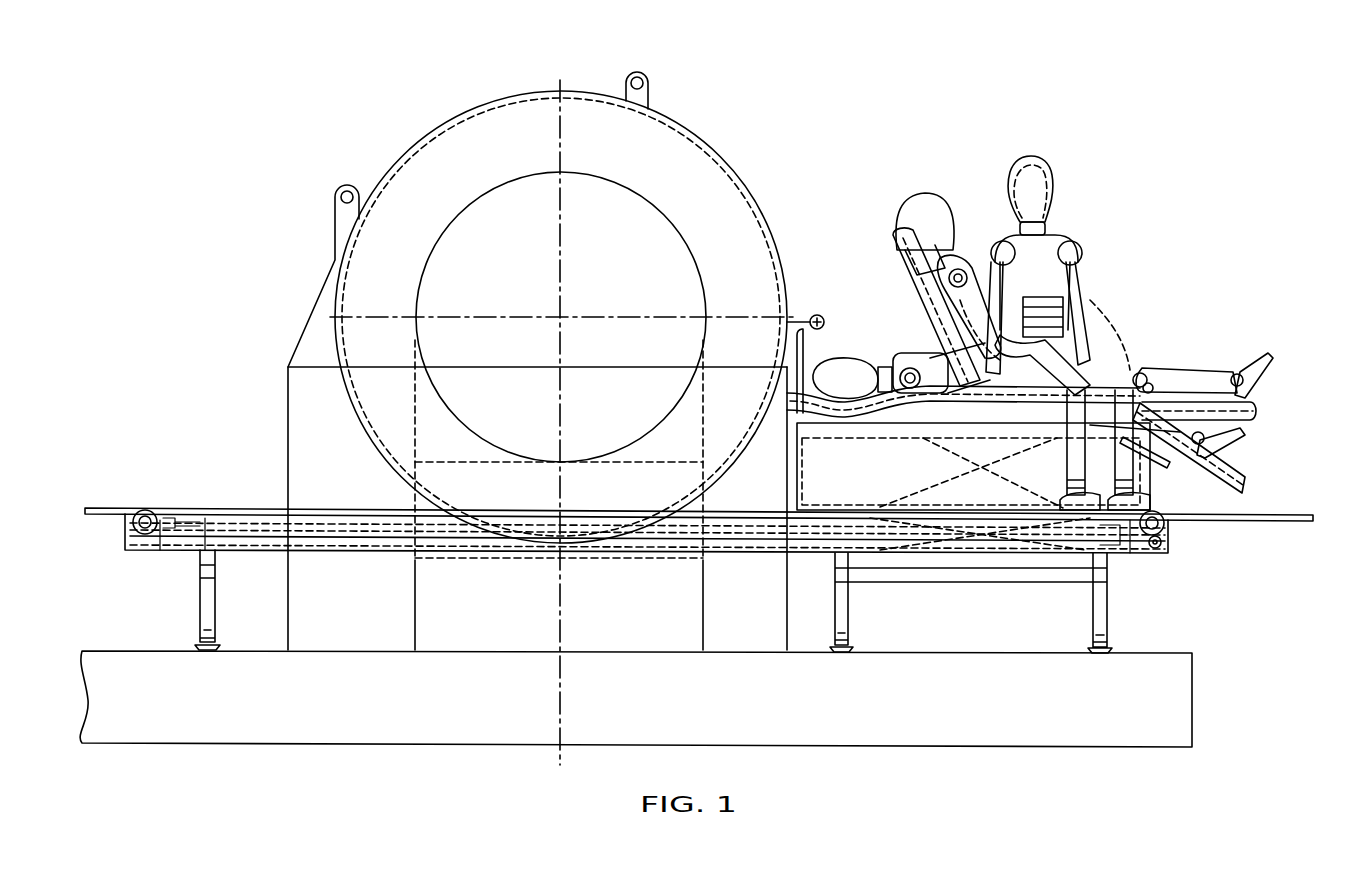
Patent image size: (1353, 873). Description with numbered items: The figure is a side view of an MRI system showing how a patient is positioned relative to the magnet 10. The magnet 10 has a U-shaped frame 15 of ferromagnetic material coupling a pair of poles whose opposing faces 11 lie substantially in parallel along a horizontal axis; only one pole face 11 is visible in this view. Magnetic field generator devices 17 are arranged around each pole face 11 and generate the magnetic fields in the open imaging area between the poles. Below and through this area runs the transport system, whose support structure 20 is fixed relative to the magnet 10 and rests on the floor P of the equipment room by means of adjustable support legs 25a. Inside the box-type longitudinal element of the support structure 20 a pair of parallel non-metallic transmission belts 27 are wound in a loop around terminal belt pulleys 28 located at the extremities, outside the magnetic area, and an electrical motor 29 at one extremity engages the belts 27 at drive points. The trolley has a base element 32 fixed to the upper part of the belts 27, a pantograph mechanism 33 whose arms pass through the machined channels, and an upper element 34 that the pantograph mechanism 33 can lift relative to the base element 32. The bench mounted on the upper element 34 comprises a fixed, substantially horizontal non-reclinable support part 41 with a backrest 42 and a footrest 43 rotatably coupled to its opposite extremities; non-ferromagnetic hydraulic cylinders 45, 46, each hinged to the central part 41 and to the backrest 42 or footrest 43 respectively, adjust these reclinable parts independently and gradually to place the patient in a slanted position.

The magnet 10 is at (731, 146).
The pole face 11 is at (663, 232).
The U-shaped frame 15 is at (512, 656).
The magnetic field generator device 17 is at (689, 114).
The support structure 20 is at (122, 537).
The adjustable support legs 25a is at (200, 604).
The transmission belts 27 is at (242, 507).
The terminal belt pulleys 28 is at (138, 508).
The electrical motor 29 is at (1165, 545).
The base element 32 is at (968, 545).
The pantograph mechanism 33 is at (938, 468).
The upper element 34 is at (816, 414).
The non-reclinable support part 41 is at (1068, 377).
The backrest 42 is at (868, 394).
The footrest 43 is at (1225, 474).
The hydraulic cylinder 45 is at (1137, 368).
The hydraulic cylinder 46 is at (1150, 372).
The floor P is at (1178, 650).